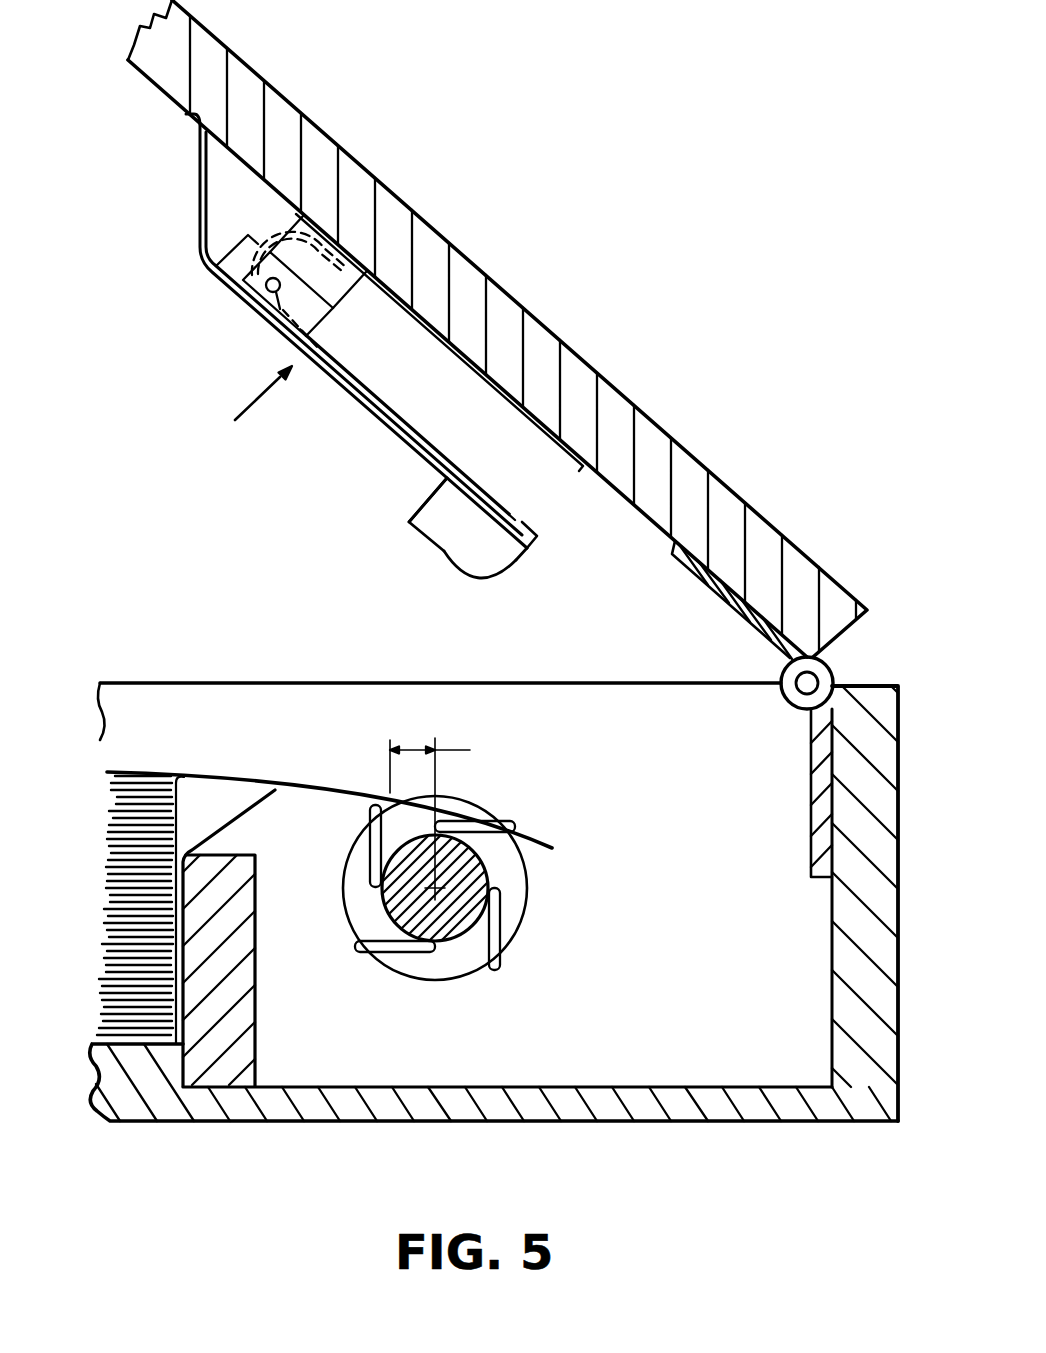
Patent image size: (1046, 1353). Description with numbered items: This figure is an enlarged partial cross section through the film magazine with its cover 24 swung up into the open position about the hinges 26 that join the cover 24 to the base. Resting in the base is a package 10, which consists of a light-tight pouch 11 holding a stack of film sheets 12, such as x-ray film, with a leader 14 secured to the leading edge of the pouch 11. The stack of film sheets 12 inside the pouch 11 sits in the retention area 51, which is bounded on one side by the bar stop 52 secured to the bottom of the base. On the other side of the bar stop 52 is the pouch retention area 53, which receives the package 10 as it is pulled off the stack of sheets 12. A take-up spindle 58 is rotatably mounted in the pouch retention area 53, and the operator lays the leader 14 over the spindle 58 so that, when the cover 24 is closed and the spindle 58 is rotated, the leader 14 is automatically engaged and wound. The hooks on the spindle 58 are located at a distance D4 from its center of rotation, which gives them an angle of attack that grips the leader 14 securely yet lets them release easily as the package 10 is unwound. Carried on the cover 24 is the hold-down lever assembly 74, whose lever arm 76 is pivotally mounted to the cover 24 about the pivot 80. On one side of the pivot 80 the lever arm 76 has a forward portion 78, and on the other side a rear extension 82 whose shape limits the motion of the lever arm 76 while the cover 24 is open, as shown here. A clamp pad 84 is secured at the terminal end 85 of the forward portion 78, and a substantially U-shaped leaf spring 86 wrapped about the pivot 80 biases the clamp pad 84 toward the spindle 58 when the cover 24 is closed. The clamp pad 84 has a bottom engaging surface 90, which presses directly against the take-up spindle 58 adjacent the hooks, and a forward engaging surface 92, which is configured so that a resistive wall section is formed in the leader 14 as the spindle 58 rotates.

The package 10 is at (128, 772).
The light-tight pouch 11 is at (186, 775).
The film sheets 12 is at (124, 803).
The leader 14 is at (320, 788).
The cover 24 is at (571, 349).
The hinges 26 is at (834, 679).
The retention area 51 is at (84, 916).
The bar stop 52 is at (256, 928).
The pouch retention area 53 is at (727, 926).
The take-up spindle 58 is at (489, 880).
The hold-down lever assembly 74 is at (288, 336).
The lever arm 76 is at (373, 414).
The forward portion 78 is at (423, 441).
The pivot 80 is at (275, 313).
The rear extension 82 is at (199, 181).
The clamp pad 84 is at (518, 562).
The terminal end 85 is at (521, 528).
The leaf spring 86 is at (557, 437).
The bottom engaging surface 90 is at (428, 549).
The forward engaging surface 92 is at (429, 497).
The distance from center of rotation D4 is at (450, 764).